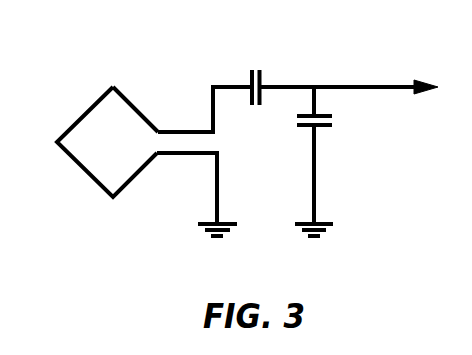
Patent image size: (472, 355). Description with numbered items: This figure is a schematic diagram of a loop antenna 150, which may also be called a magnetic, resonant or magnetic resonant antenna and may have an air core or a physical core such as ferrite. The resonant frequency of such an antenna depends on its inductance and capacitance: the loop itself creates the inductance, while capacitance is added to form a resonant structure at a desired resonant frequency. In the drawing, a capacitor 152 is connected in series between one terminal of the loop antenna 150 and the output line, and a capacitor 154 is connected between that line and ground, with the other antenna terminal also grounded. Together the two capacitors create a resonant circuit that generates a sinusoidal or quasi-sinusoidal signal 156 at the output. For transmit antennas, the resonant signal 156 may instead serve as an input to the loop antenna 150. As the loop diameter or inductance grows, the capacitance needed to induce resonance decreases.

The loop antenna 150 is at (90, 105).
The capacitor 152 is at (248, 78).
The capacitor 154 is at (325, 127).
The sinusoidal or quasi-sinusoidal signal 156 is at (380, 86).